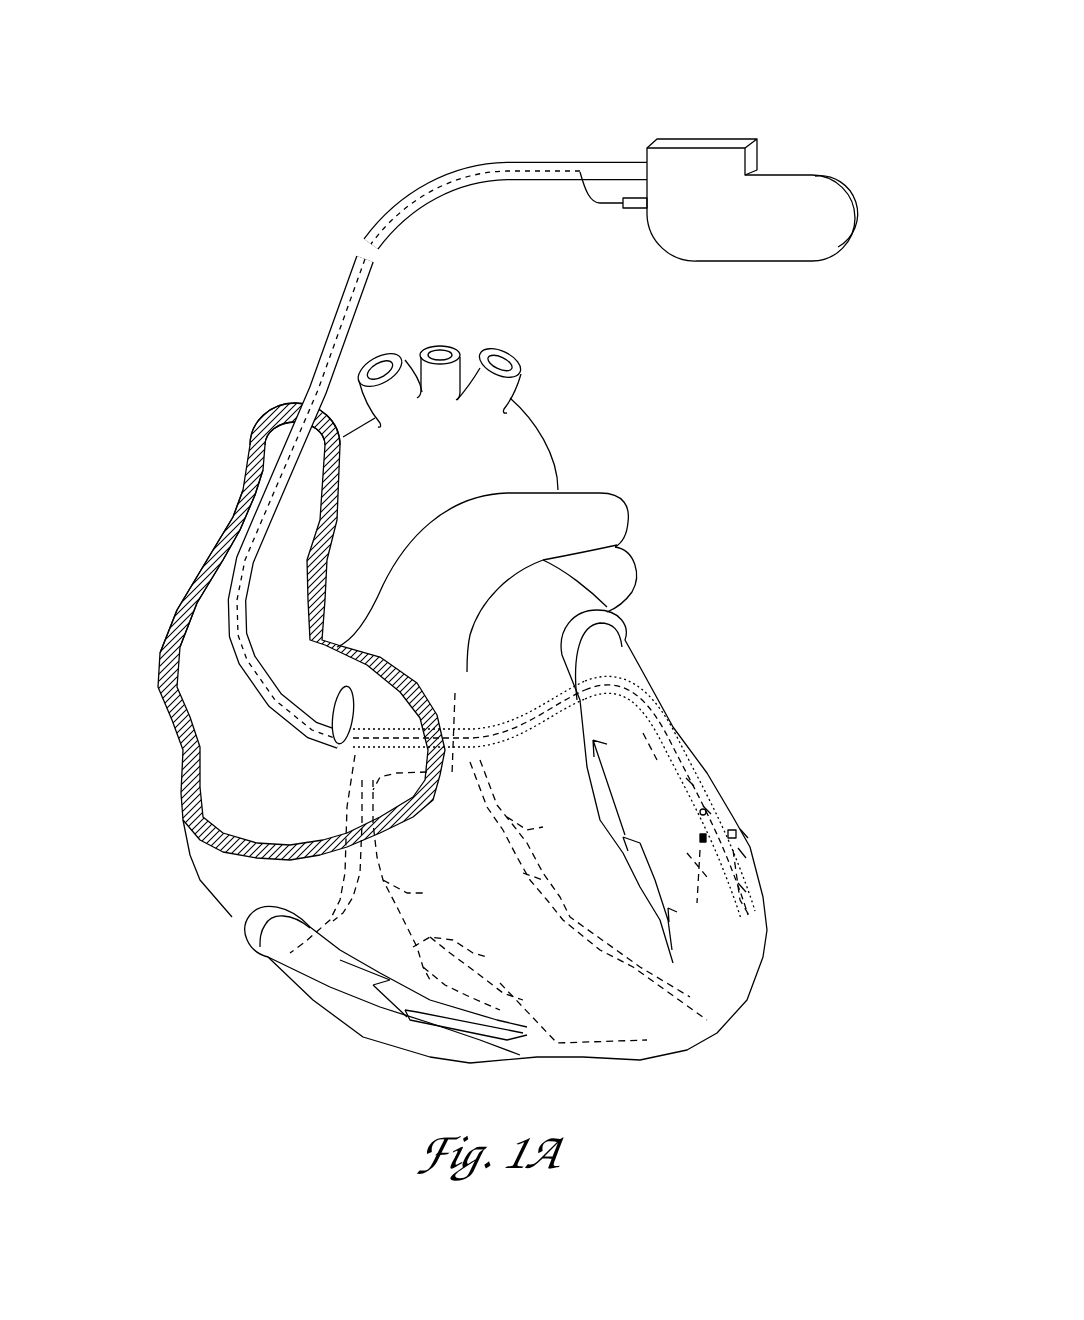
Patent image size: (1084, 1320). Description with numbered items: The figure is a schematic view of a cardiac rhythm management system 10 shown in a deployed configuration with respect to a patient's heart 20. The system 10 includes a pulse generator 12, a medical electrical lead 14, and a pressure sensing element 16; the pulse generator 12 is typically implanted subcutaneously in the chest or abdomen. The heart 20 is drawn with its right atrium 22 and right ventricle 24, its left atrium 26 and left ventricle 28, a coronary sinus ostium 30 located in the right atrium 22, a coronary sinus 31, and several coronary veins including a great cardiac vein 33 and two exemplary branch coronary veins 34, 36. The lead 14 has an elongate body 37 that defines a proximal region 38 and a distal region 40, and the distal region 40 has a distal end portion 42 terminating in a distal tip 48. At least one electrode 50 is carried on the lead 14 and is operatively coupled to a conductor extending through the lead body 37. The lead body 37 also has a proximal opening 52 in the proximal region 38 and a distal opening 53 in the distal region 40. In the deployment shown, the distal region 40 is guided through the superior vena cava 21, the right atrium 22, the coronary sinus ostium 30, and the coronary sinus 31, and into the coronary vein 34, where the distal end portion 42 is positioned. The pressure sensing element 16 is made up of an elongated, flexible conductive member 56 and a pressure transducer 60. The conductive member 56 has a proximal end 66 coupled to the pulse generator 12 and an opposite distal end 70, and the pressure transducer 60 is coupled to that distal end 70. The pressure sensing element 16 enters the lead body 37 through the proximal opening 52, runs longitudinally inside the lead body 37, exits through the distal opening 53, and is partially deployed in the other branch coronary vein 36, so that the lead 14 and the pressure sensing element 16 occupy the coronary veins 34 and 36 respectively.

The cardiac rhythm management system 10 is at (604, 61).
The pulse generator 12 is at (858, 205).
The medical electrical lead 14 is at (330, 298).
The pressure sensing element 16 is at (588, 215).
The heart 20 is at (708, 1054).
The superior vena cava 21 is at (265, 463).
The right atrium 22 is at (200, 708).
The right ventricle 24 is at (307, 1010).
The left atrium 26 is at (544, 628).
The left ventricle 28 is at (754, 854).
The coronary sinus ostium 30 is at (335, 697).
The coronary sinus 31 is at (452, 720).
The great cardiac vein 33 is at (587, 683).
The branch coronary vein 34 is at (680, 728).
The branch coronary vein 36 is at (718, 893).
The elongate body 37 is at (217, 617).
The proximal region 38 is at (503, 153).
The distal region 40 is at (359, 756).
The distal end portion 42 is at (679, 783).
The distal tip 48 is at (742, 888).
The electrode 50 is at (736, 835).
The proximal opening 52 is at (578, 178).
The distal opening 53 is at (707, 810).
The conductive member 56 is at (388, 207).
The pressure transducer 60 is at (693, 844).
The proximal end 66 is at (636, 210).
The distal end 70 is at (703, 812).